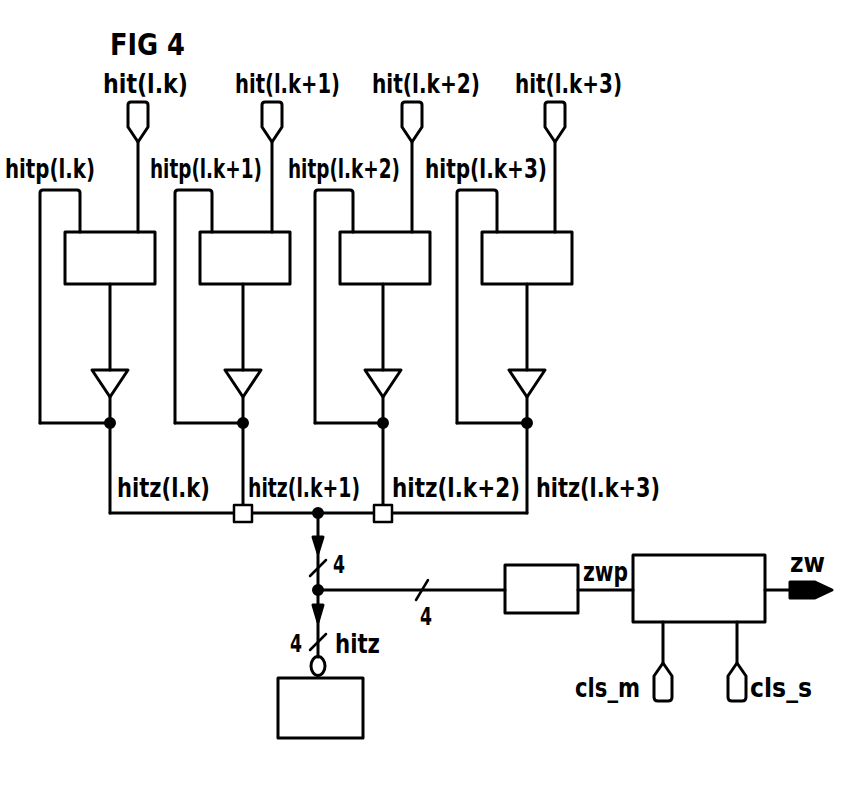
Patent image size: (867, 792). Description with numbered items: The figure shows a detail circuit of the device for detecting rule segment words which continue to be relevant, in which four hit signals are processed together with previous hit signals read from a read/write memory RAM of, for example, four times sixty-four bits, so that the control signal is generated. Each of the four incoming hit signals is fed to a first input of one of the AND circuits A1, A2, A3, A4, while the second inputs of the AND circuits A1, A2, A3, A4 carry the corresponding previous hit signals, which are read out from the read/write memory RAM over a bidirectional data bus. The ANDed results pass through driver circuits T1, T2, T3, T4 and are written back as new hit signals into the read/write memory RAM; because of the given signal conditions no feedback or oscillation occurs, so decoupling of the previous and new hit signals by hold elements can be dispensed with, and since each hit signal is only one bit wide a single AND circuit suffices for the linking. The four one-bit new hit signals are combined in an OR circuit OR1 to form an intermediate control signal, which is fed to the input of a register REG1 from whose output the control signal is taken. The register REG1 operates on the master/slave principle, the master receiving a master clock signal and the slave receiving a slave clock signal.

The AND circuit A1 is at (78, 268).
The AND circuit A2 is at (213, 268).
The AND circuit A3 is at (353, 268).
The AND circuit A4 is at (495, 268).
The driver circuit T1 is at (113, 380).
The driver circuit T2 is at (246, 380).
The driver circuit T3 is at (386, 380).
The driver circuit T4 is at (530, 380).
The OR circuit OR1 is at (541, 615).
The register REG1 is at (699, 588).
The read/write memory RAM is at (320, 727).